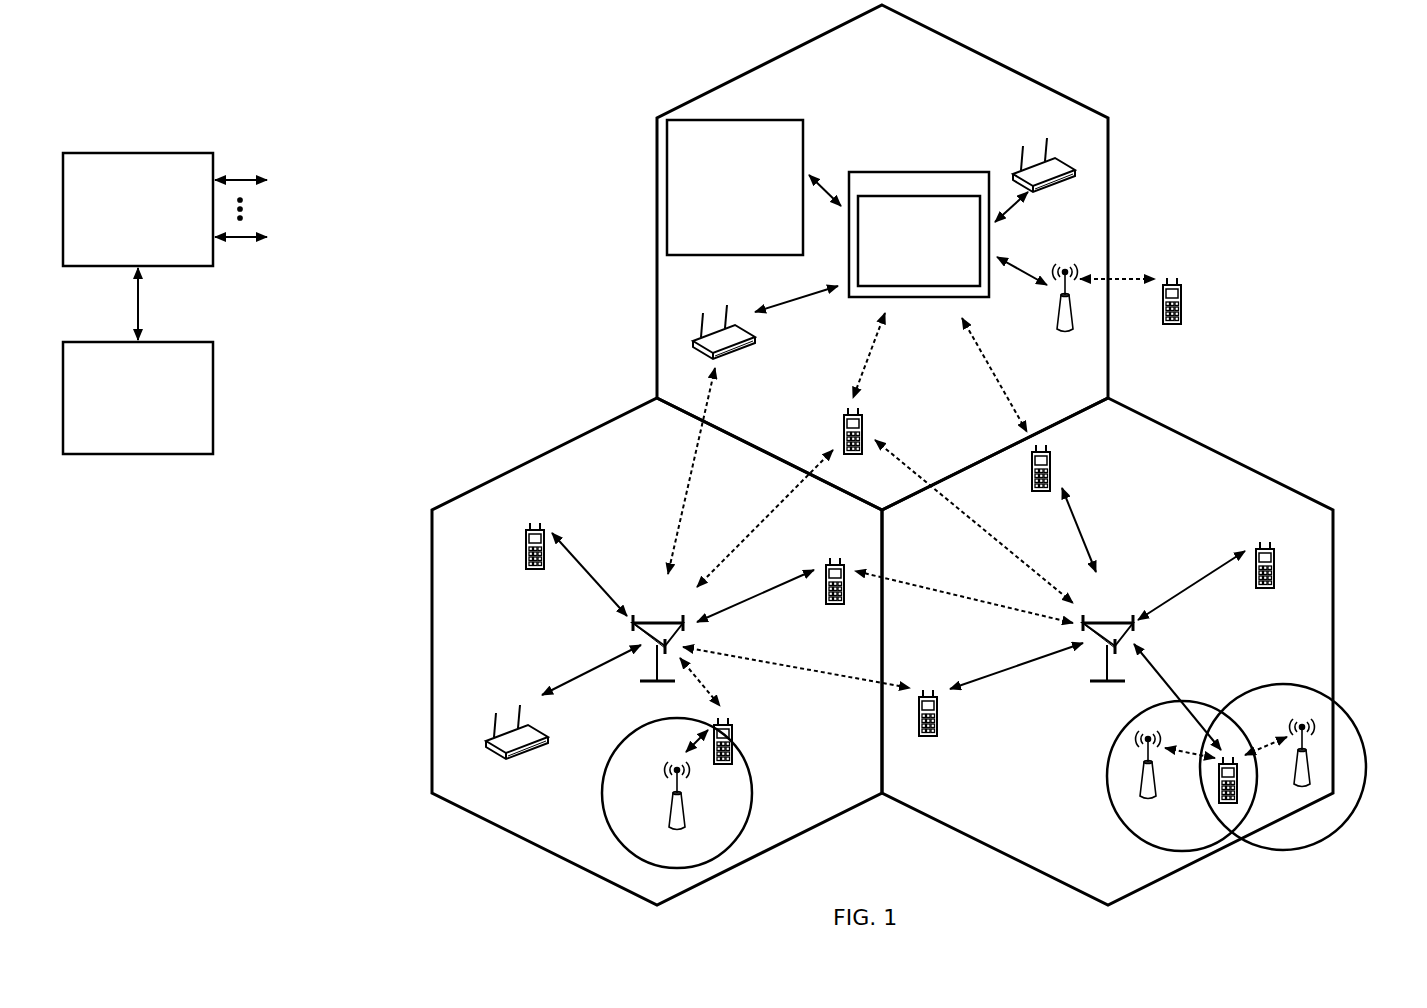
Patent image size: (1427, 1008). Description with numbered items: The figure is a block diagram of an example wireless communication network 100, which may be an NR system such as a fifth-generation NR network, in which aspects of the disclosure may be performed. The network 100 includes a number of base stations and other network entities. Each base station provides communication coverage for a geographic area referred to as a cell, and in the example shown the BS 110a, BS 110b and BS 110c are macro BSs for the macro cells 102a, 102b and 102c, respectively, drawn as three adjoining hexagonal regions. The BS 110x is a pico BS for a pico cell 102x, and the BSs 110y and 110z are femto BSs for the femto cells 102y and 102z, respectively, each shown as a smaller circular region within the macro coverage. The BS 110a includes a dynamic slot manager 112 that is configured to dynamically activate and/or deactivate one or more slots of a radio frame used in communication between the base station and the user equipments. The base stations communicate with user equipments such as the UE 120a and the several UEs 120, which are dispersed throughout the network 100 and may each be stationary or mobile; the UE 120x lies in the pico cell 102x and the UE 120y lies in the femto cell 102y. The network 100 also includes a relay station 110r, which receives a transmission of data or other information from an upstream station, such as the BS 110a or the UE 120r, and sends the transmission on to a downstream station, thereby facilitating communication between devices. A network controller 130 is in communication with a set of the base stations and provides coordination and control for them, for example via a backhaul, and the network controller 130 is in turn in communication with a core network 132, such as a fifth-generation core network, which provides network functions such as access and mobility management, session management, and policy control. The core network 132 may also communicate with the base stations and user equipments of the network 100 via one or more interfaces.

The wireless communication network 100 is at (1259, 78).
The macro cell 102a is at (1008, 48).
The macro cell 102b is at (543, 456).
The macro cell 102c is at (1226, 457).
The pico cell 102x is at (625, 738).
The femto cell 102y is at (1112, 742).
The femto cell 102z is at (1278, 684).
The base station 110a is at (943, 171).
The base station 110b is at (656, 618).
The base station 110c is at (1107, 618).
The relay station 110r is at (1052, 316).
The pico base station 110x is at (686, 820).
The femto base station 110y is at (1158, 798).
The femto base station 110z is at (1310, 780).
The dynamic slot manager 112 is at (855, 276).
The user equipment 120 is at (1046, 160).
The user equipment 120a is at (790, 118).
The user equipment 120r is at (1182, 320).
The user equipment 120x is at (734, 736).
The user equipment 120y is at (1218, 798).
The network controller 130 is at (137, 152).
The core network 132 is at (180, 341).